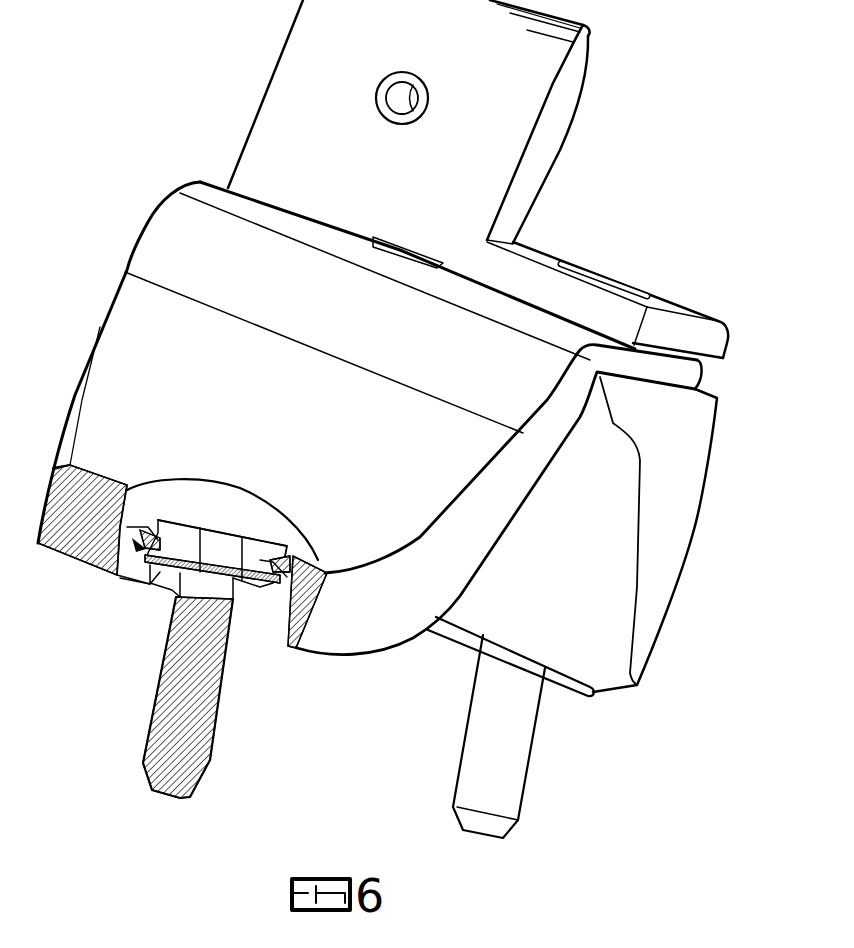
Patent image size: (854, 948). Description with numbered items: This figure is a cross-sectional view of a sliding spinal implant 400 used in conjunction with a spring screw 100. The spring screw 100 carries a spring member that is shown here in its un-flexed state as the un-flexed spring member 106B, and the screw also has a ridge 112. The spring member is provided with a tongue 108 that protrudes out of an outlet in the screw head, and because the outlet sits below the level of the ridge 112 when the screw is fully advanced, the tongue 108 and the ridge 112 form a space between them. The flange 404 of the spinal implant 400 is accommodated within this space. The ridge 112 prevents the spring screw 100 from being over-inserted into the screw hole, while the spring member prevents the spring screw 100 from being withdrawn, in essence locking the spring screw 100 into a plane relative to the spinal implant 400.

The sliding spinal implant 400 is at (630, 186).
The flange 404 is at (131, 490).
The spring screw 100 is at (142, 648).
The un-flexed spring member 106B is at (173, 585).
The tongue 108 is at (287, 590).
The ridge 112 is at (288, 545).